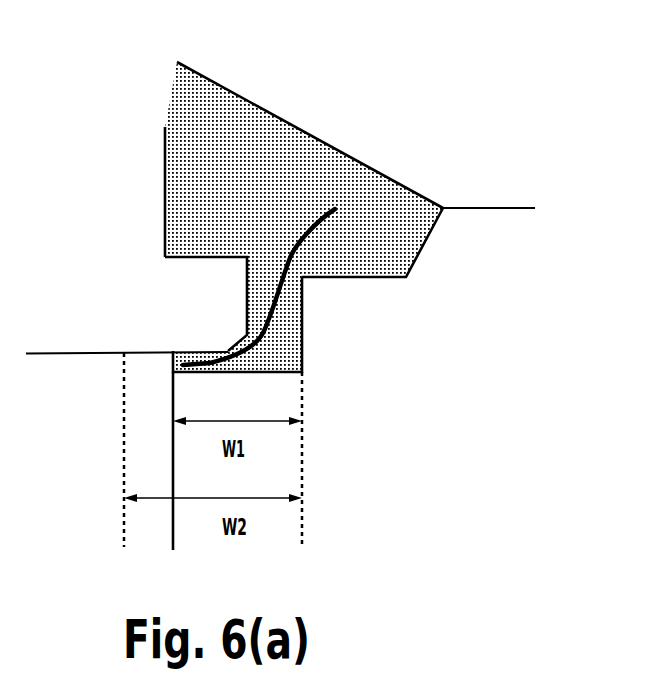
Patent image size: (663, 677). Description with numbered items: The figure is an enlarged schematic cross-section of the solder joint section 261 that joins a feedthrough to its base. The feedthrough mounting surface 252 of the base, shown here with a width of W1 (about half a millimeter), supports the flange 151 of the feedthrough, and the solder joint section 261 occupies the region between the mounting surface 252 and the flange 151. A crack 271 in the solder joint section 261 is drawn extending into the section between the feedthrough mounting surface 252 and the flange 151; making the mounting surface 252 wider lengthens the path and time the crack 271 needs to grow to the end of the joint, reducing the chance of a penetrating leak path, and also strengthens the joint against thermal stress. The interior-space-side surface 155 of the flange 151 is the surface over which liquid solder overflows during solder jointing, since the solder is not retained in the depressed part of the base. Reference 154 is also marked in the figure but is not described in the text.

The flange 151 is at (165, 155).
The pole tip portion 154 is at (208, 256).
The interior-space-side surface 155 is at (105, 354).
The feedthrough mounting surface 252 is at (260, 372).
The solder joint section 261 is at (200, 74).
The crack 271 is at (323, 223).